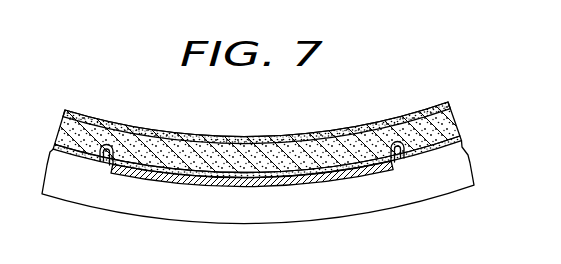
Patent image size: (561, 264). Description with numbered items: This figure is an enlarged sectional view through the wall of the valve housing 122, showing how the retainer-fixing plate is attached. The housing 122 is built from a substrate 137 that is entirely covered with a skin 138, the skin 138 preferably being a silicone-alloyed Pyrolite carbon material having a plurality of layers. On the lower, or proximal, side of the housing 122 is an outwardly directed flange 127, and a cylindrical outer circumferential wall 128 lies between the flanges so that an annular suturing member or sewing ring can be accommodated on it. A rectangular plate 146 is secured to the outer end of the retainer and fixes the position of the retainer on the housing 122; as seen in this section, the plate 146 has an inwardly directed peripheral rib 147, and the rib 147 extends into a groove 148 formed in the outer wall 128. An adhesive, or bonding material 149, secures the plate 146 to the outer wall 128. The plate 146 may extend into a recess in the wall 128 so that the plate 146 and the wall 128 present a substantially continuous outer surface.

The housing 122 is at (65, 110).
The flange 127 is at (412, 187).
The outer circumferential wall 128 is at (482, 131).
The substrate 137 is at (452, 116).
The skin 138 is at (403, 114).
The rectangular plate 146 is at (325, 175).
The peripheral rib 147 is at (104, 162).
The groove 148 is at (110, 144).
The bonding material 149 is at (206, 168).